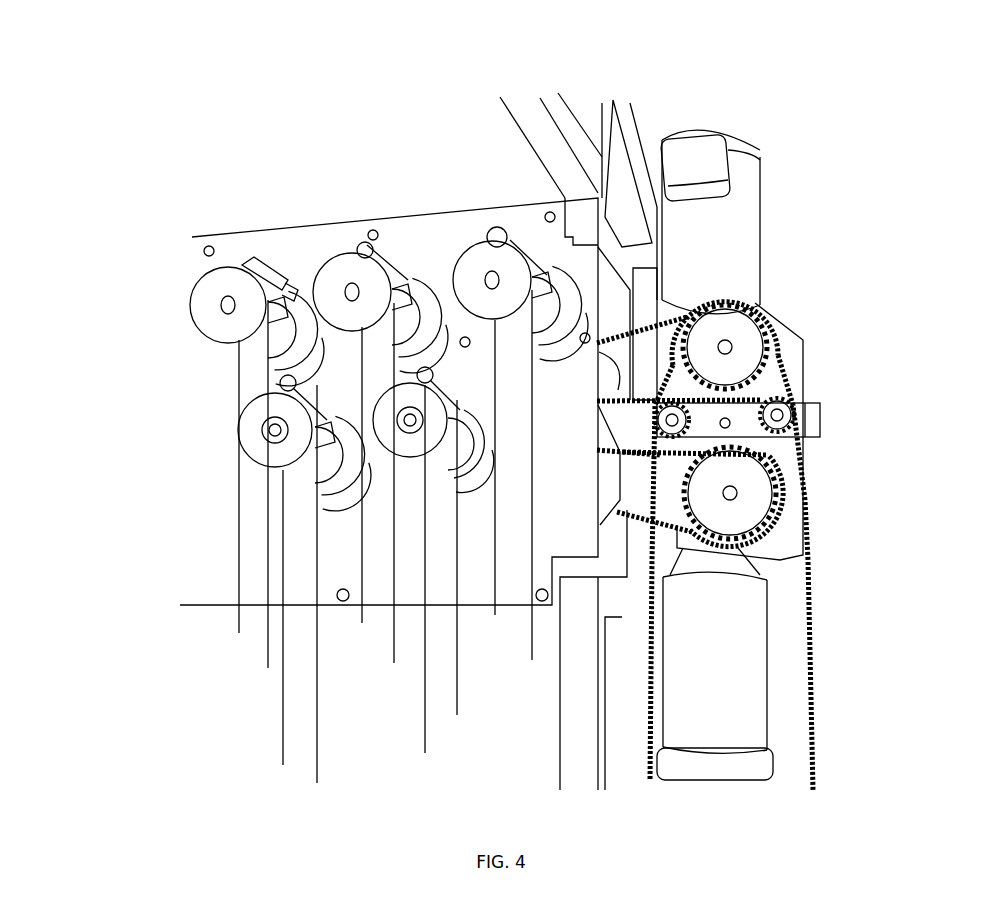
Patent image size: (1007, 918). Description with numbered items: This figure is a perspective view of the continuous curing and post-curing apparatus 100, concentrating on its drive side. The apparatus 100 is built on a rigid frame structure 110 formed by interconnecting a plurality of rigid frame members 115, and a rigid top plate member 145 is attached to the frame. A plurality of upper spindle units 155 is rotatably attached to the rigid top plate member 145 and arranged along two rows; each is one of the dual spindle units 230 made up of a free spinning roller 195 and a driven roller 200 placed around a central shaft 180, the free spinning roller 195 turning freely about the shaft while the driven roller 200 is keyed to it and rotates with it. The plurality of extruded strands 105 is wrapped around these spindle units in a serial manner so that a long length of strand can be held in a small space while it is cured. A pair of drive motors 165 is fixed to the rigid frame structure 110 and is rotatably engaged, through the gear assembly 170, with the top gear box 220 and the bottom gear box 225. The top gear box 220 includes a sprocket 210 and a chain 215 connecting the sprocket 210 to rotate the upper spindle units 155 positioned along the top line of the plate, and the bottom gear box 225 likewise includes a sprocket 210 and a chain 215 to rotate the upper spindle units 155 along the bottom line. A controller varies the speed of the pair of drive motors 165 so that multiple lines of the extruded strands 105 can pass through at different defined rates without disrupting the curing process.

The apparatus 100 is at (355, 195).
The extruded strands 105 is at (237, 540).
The rigid frame structure 110 is at (578, 713).
The rigid frame members 115 is at (560, 115).
The rigid top plate member 145 is at (303, 245).
The upper spindle units 155 is at (270, 405).
The drive motors 165 is at (738, 245).
The gear assembly 170 is at (794, 353).
The central shaft 180 is at (408, 418).
The free spinning roller 195 is at (357, 477).
The driven roller 200 is at (317, 523).
The sprocket 210 is at (785, 365).
The chain 215 is at (810, 607).
The top gear box 220 is at (752, 325).
The bottom gear box 225 is at (757, 473).
The dual spindle units 230 is at (523, 236).